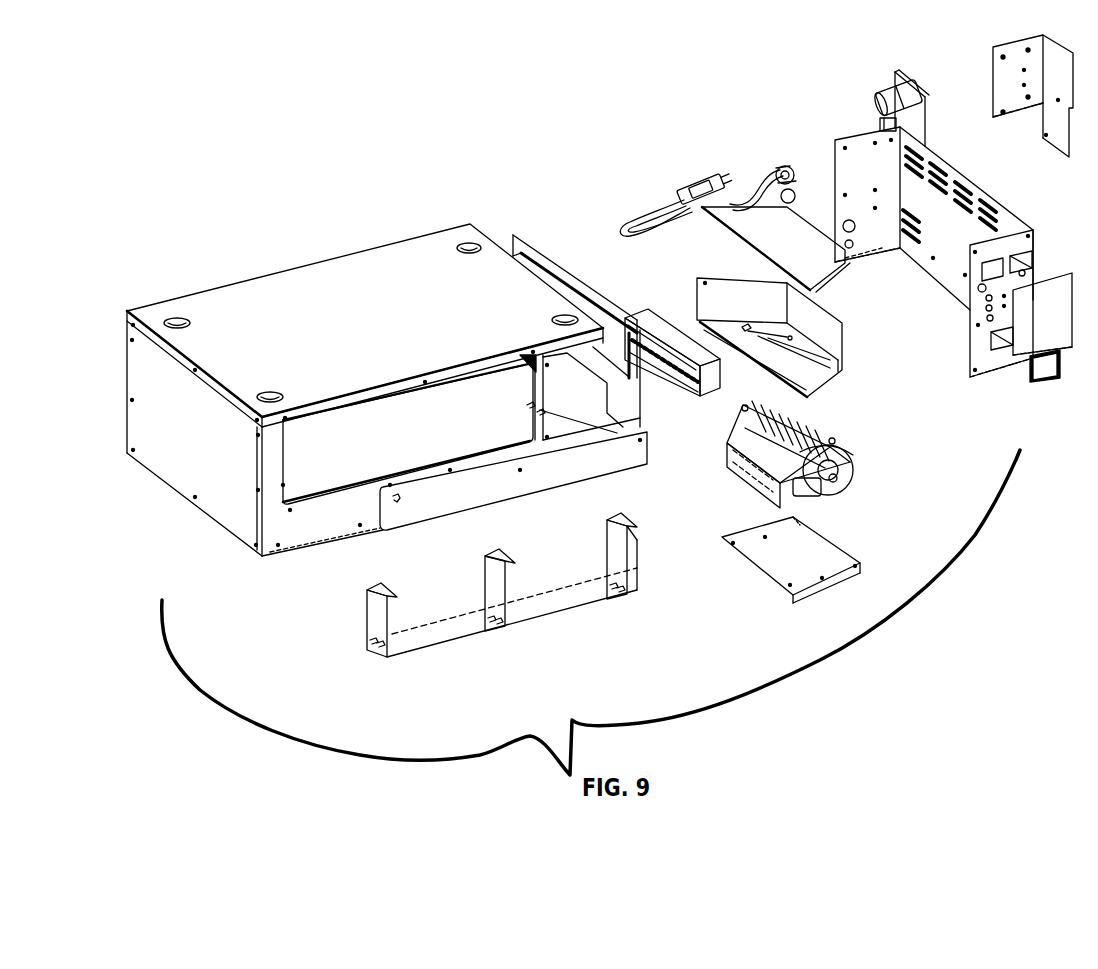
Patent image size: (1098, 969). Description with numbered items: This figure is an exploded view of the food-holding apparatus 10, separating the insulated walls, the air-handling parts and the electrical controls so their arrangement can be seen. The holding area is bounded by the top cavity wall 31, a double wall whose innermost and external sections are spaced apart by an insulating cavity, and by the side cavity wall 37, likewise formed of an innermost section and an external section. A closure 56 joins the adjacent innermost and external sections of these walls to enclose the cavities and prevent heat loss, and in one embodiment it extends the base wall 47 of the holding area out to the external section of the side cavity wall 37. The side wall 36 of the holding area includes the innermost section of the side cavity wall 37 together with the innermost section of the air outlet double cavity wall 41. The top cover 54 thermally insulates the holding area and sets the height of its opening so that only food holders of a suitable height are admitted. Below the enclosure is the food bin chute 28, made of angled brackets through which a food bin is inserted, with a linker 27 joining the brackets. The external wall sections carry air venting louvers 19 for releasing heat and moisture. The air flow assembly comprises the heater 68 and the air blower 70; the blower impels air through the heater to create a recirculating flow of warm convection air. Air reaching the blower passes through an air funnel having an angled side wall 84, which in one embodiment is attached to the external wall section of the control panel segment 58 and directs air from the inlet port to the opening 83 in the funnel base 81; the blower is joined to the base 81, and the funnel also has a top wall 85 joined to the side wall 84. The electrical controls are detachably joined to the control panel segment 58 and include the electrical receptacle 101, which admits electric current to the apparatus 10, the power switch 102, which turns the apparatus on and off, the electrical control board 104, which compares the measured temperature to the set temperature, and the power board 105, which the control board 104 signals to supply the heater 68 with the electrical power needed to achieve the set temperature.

The food-holding apparatus 10 is at (383, 398).
The top cavity wall 31 is at (243, 280).
The closure 56 is at (124, 312).
The air outlet double cavity wall 41 is at (177, 490).
The side cavity wall 37 is at (312, 548).
The base wall 47 is at (355, 486).
The side wall 36 is at (530, 397).
The top cover 54 is at (605, 478).
The linker 27 is at (468, 585).
The food bin chute 28 is at (360, 615).
The air blower 70 is at (748, 493).
The heater 68 is at (644, 312).
The angled side wall 84 is at (786, 337).
The funnel base 81 is at (705, 332).
The opening 83 is at (788, 347).
The top wall 85 is at (743, 246).
The electrical receptacle 101 is at (699, 183).
The control panel segment 58 is at (932, 246).
The air venting louvers 19 is at (908, 248).
The power board 105 is at (893, 76).
The electrical control board 104 is at (975, 375).
The power switch 102 is at (1045, 381).